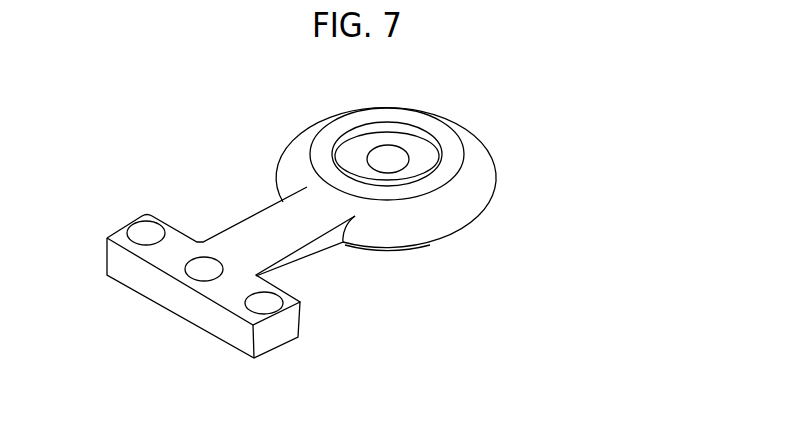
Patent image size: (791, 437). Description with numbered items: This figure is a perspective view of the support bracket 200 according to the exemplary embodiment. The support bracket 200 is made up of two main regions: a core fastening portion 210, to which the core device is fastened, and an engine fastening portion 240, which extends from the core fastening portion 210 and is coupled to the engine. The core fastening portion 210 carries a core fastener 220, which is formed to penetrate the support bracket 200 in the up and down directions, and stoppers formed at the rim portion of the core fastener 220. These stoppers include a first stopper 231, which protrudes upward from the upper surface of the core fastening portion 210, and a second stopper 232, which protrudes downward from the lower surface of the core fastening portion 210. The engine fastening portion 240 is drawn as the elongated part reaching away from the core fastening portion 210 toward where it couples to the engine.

The support bracket 200 is at (178, 104).
The core fastening portion 210 is at (593, 75).
The core fastener 220 is at (384, 150).
The first stopper 231 is at (463, 152).
The second stopper 232 is at (403, 247).
The engine fastening portion 240 is at (180, 303).